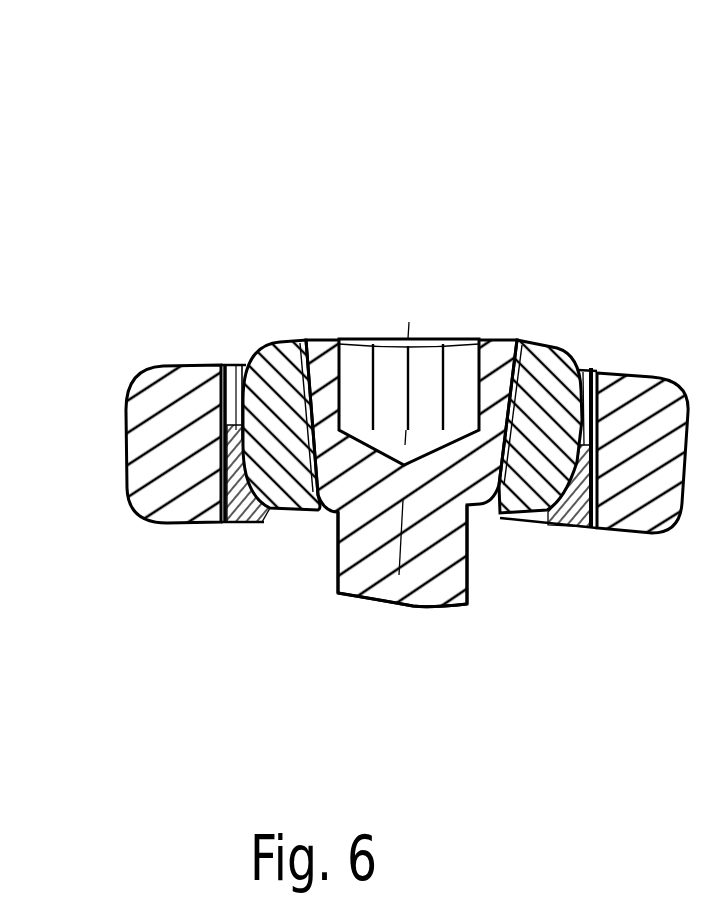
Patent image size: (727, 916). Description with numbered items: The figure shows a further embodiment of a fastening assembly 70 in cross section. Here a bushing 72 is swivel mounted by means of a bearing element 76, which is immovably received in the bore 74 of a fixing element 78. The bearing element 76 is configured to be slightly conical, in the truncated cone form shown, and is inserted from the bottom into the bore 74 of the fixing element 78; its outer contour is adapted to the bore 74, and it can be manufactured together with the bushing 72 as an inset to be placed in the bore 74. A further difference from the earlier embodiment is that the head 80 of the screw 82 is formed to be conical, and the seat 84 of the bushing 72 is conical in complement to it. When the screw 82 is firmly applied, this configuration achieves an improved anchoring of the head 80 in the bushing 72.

The fastening assembly 70 is at (371, 262).
The bushing 72 is at (273, 357).
The bore 74 is at (226, 362).
The bearing element 76 is at (237, 507).
The fixing element 78 is at (140, 483).
The head 80 is at (503, 340).
The screw 82 is at (373, 558).
The seat 84 is at (305, 342).